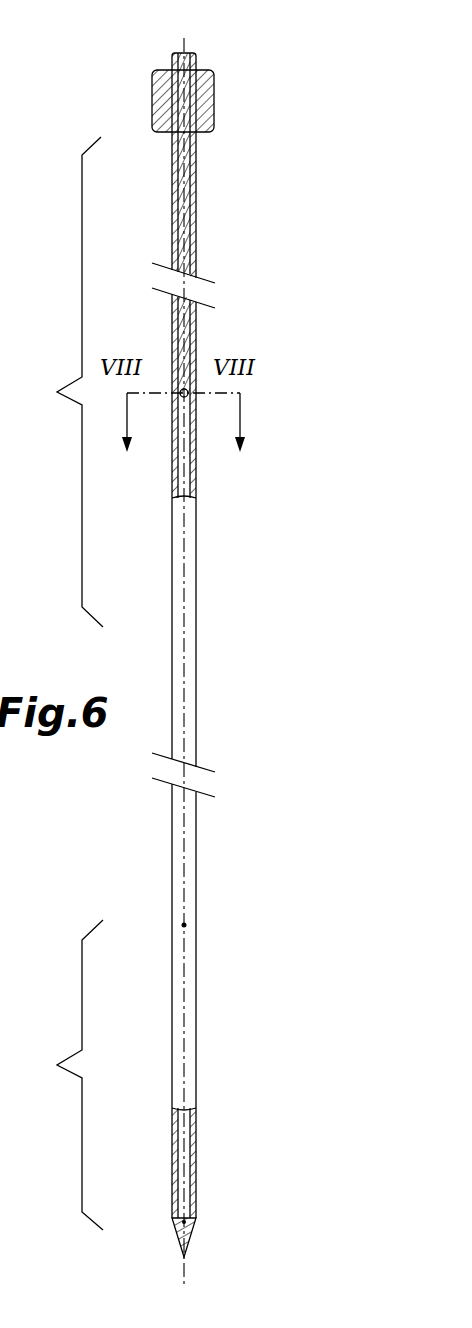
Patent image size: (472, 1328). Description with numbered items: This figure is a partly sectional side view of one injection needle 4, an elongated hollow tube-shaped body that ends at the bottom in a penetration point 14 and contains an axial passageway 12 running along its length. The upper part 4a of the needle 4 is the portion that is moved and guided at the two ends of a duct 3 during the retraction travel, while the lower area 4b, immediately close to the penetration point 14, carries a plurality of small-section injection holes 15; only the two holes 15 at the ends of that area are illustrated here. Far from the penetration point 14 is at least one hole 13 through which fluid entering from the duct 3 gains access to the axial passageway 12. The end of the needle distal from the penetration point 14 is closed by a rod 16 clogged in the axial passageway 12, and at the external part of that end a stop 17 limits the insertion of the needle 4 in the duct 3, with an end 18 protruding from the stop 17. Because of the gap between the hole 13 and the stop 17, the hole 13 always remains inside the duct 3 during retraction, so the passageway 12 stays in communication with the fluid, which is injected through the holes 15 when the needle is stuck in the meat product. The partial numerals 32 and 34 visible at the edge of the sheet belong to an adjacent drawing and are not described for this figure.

The injection needle 4 is at (190, 700).
The part of the needle 4a is at (55, 382).
The area close to the penetration point 4b is at (53, 1075).
The axial passageway 12 is at (178, 457).
The hole 13 is at (192, 402).
The penetration point 14 is at (178, 1237).
The injection hole 15 is at (186, 924).
The rod 16 is at (193, 190).
The stop 17 is at (157, 100).
The end 18 is at (193, 62).
The duct 3 is at (6, 202).
The partial numeral from adjacent figure 32 is at (14, 237).
The partial numeral from adjacent figure 34 is at (10, 287).